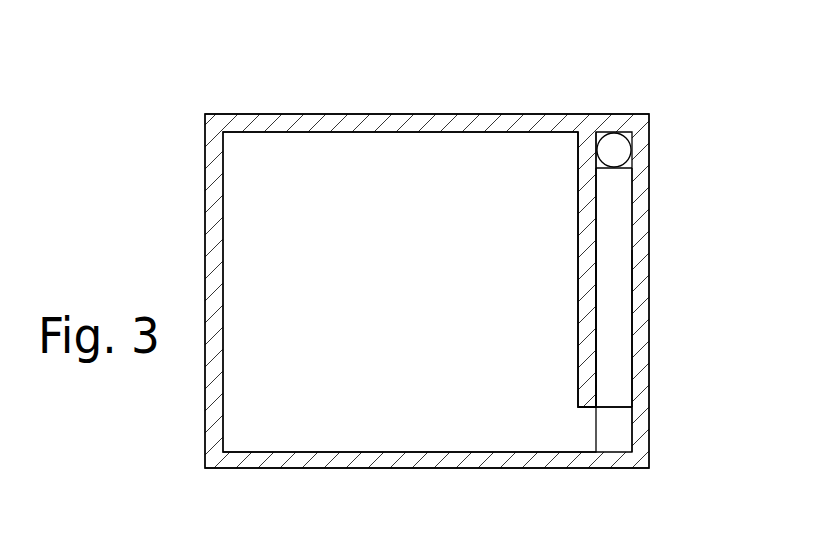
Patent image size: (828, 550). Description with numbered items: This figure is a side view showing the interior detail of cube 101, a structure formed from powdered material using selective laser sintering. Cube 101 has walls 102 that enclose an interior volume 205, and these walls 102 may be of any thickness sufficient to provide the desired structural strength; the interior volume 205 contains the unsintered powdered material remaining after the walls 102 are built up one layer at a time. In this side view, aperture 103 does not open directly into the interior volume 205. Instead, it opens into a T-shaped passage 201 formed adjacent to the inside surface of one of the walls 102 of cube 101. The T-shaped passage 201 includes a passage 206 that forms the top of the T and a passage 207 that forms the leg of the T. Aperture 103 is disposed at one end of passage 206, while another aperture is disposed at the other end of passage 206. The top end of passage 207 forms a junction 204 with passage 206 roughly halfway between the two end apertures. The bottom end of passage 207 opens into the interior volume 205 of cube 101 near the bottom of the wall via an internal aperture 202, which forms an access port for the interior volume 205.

The cube 101 is at (668, 105).
The walls 102 is at (348, 131).
The aperture 103 is at (610, 148).
The T-shaped passage 201 is at (610, 168).
The internal aperture 202 is at (613, 385).
The junction 204 is at (596, 170).
The interior volume 205 is at (248, 190).
The passage 206 is at (618, 168).
The passage 207 is at (615, 320).